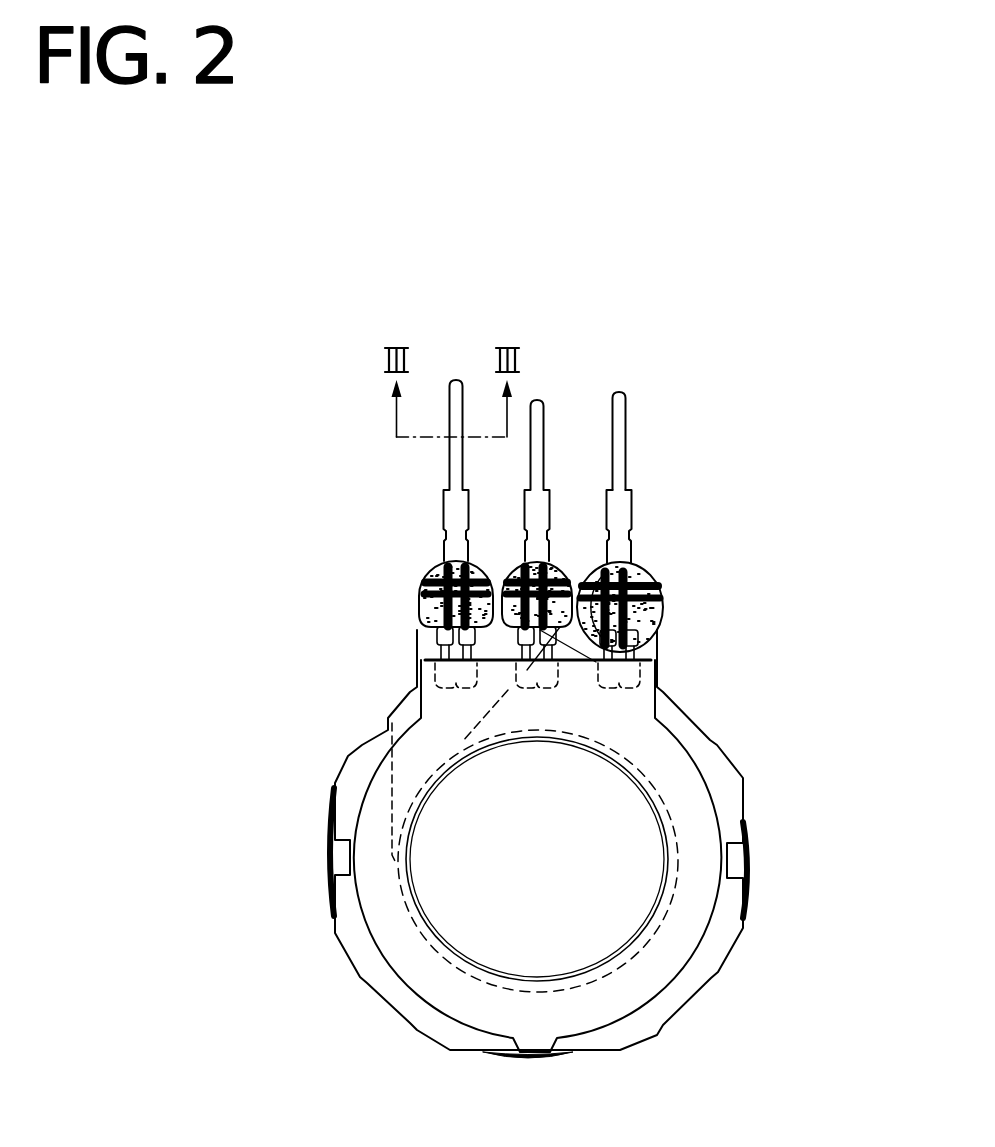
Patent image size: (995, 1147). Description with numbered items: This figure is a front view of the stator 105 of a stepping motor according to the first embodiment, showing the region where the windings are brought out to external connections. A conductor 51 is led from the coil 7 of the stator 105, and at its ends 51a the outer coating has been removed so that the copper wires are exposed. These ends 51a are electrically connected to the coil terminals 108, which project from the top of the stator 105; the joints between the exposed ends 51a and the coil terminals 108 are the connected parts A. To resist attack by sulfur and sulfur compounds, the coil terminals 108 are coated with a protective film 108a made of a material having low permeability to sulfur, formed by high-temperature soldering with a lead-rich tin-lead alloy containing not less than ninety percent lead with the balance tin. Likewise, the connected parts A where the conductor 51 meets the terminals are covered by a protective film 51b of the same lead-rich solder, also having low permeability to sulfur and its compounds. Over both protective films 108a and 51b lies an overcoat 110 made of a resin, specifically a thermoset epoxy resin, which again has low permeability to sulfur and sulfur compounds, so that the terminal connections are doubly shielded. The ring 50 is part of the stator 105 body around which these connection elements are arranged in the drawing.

The coil 7 is at (753, 857).
The insulating ring 50 is at (703, 912).
The conductor 51 is at (410, 563).
The ends of the conductor 51a is at (430, 577).
The protective film 51b is at (420, 587).
The stator 105 is at (712, 728).
The coil terminals 108 is at (627, 412).
The protective film 108a is at (627, 458).
The overcoat 110 is at (541, 507).
The connected parts A is at (680, 597).